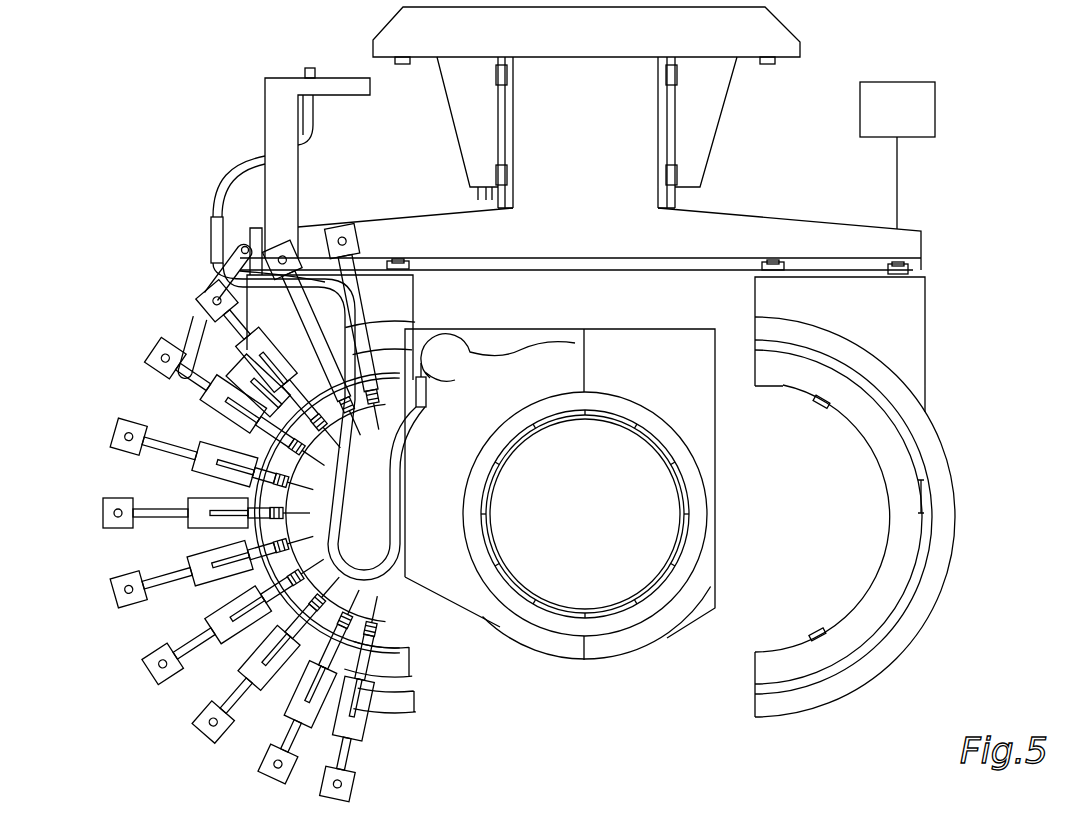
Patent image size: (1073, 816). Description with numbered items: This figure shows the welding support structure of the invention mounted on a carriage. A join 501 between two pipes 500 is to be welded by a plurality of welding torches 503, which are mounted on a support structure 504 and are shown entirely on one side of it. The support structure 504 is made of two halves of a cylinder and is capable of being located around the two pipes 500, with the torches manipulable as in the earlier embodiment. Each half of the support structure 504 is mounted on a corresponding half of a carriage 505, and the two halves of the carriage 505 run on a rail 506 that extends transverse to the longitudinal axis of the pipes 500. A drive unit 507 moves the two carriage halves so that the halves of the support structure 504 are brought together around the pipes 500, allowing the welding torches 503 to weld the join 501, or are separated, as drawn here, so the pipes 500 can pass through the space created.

The pipes 500 is at (653, 610).
The join 501 is at (515, 587).
The welding torches 503 is at (213, 598).
The support structure 504 is at (826, 638).
The carriage 505 is at (904, 316).
The rail 506 is at (903, 258).
The drive unit 507 is at (897, 155).